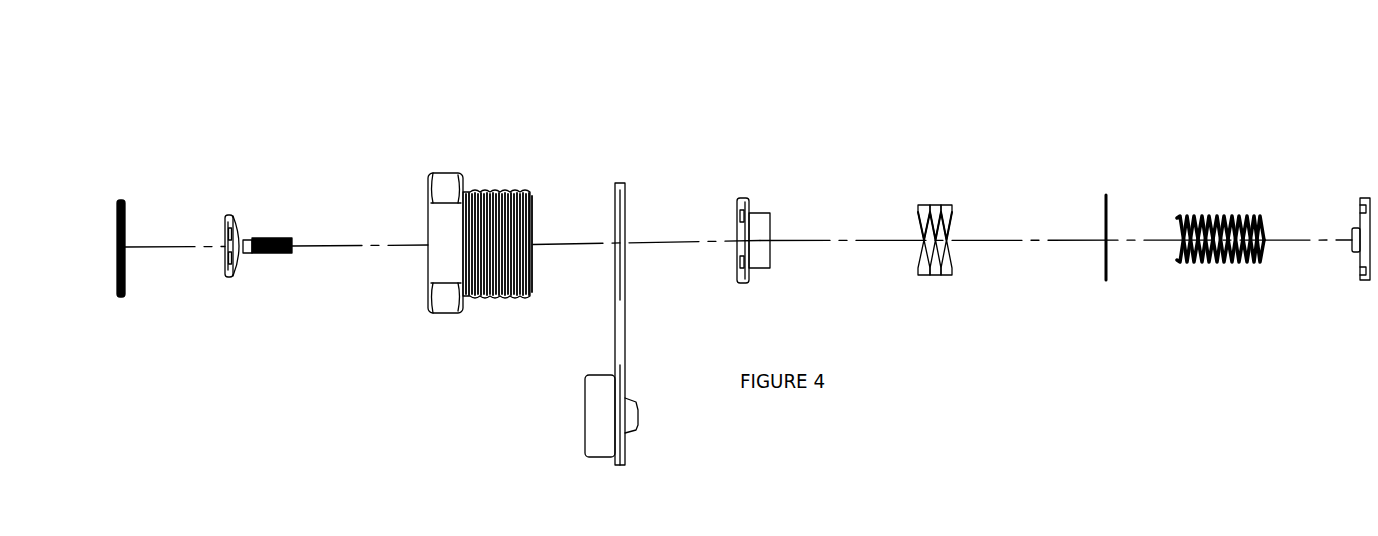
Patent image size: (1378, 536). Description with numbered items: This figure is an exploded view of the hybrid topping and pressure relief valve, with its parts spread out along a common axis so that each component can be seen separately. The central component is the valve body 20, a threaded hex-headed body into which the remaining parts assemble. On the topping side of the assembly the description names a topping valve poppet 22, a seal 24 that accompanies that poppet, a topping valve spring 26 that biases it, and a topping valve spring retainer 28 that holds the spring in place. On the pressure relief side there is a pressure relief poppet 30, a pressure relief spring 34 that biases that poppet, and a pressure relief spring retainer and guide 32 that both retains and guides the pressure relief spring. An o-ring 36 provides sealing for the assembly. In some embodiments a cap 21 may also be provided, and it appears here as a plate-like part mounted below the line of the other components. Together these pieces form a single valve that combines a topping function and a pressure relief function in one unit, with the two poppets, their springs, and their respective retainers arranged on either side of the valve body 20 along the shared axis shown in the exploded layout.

The valve body 20 is at (477, 185).
The cap 21 is at (640, 436).
The topping valve poppet 22 is at (738, 199).
The seal 24 is at (651, 161).
The topping valve spring 26 is at (933, 209).
The topping valve spring retainer 28 is at (1104, 195).
The pressure relief poppet 30 is at (228, 210).
The pressure relief spring retainer and guide 32 is at (1356, 261).
The pressure relief spring 34 is at (1179, 209).
The o-ring 36 is at (117, 297).